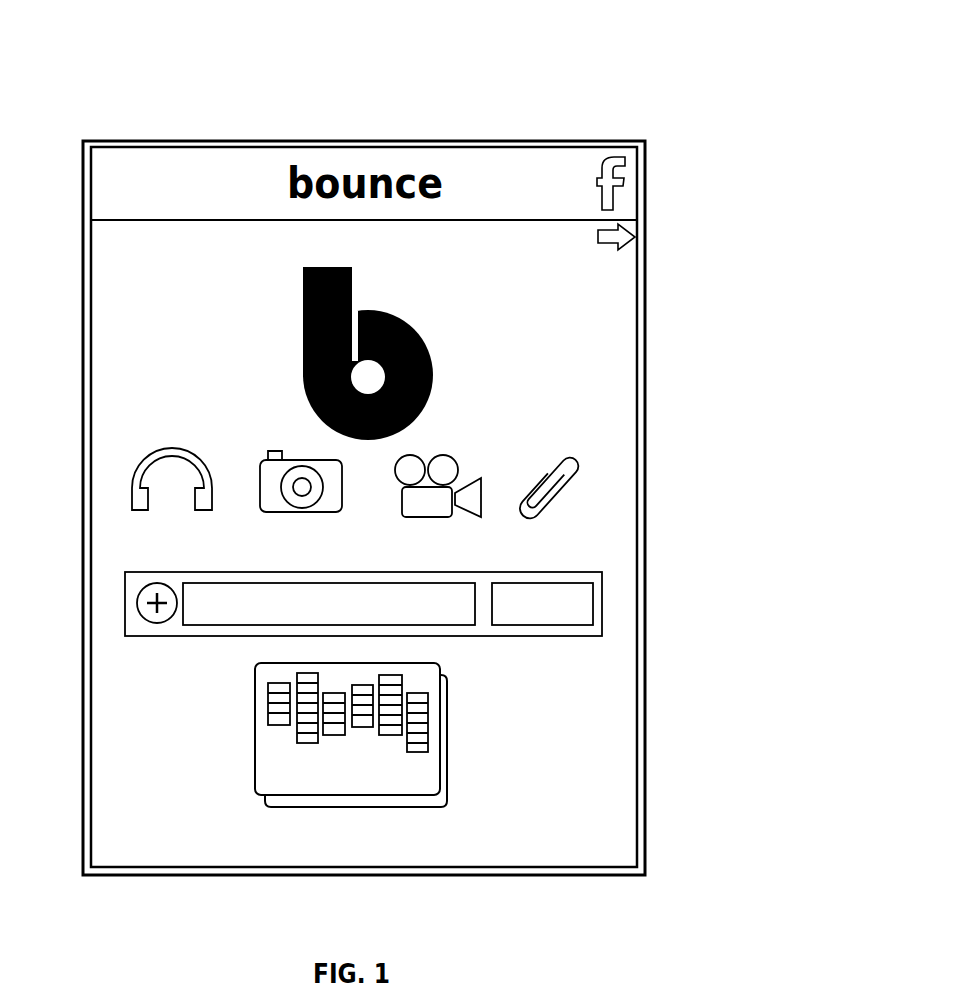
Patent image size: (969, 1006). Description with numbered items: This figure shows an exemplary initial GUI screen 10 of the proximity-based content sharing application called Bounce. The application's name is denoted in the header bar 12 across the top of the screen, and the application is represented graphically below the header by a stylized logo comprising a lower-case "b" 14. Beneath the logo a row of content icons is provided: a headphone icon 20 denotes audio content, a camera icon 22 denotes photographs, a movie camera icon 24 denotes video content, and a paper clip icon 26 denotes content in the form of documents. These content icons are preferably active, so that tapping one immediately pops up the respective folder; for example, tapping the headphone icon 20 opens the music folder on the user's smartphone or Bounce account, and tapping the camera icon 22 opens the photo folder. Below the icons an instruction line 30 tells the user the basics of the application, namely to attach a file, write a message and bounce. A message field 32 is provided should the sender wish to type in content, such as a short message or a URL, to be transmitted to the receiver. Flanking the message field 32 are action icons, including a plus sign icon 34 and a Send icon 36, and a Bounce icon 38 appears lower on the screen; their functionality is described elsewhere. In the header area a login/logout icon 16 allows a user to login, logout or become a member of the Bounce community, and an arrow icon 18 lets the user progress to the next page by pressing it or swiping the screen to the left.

The initial GUI screen 10 is at (561, 59).
The header bar 12 is at (183, 158).
The lower-case b logo 14 is at (271, 333).
The login/logout icon 16 is at (580, 161).
The arrow icon 18 is at (636, 235).
The headphone icon 20 is at (172, 438).
The camera icon 22 is at (277, 439).
The movie camera icon 24 is at (449, 429).
The paper clip icon 26 is at (594, 429).
The instruction line 30 is at (613, 529).
The message field 32 is at (217, 618).
The + sign icon 34 is at (137, 604).
The Send icon 36 is at (584, 603).
The Bounce icon 38 is at (255, 761).